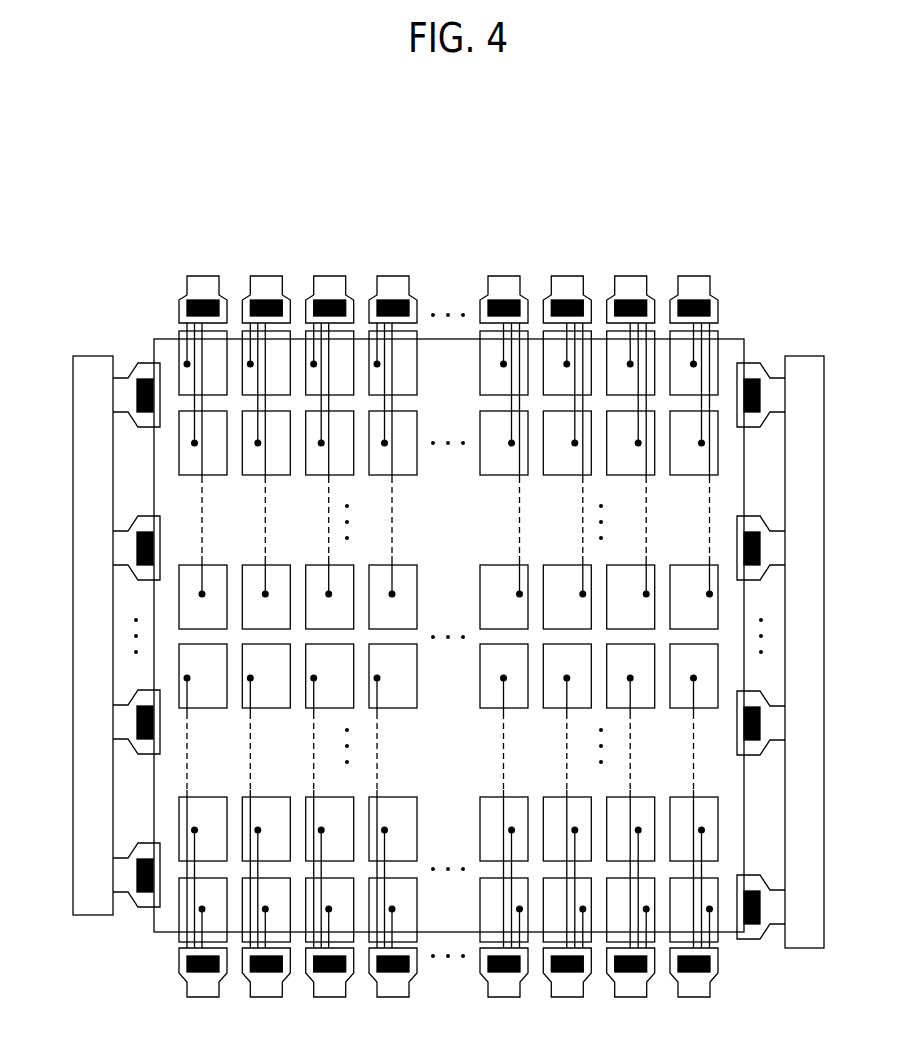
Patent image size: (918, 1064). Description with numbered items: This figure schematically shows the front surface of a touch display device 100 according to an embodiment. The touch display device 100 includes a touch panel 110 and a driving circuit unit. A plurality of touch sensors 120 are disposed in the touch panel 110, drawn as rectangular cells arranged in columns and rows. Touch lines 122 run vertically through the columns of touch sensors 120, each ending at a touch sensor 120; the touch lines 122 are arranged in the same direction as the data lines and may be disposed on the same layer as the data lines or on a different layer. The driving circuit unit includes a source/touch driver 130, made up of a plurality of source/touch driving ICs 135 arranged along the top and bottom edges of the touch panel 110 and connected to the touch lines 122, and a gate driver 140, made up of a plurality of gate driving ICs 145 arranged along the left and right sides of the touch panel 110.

The touch display device 100 is at (356, 172).
The touch panel 110 is at (735, 338).
The touch sensors 120 is at (552, 475).
The touch lines 122 is at (584, 475).
The source/touch driver 130 is at (705, 267).
The source/touch driving ICs 135 is at (187, 295).
The gate driver 140 is at (88, 355).
The gate driving ICs 145 is at (125, 388).